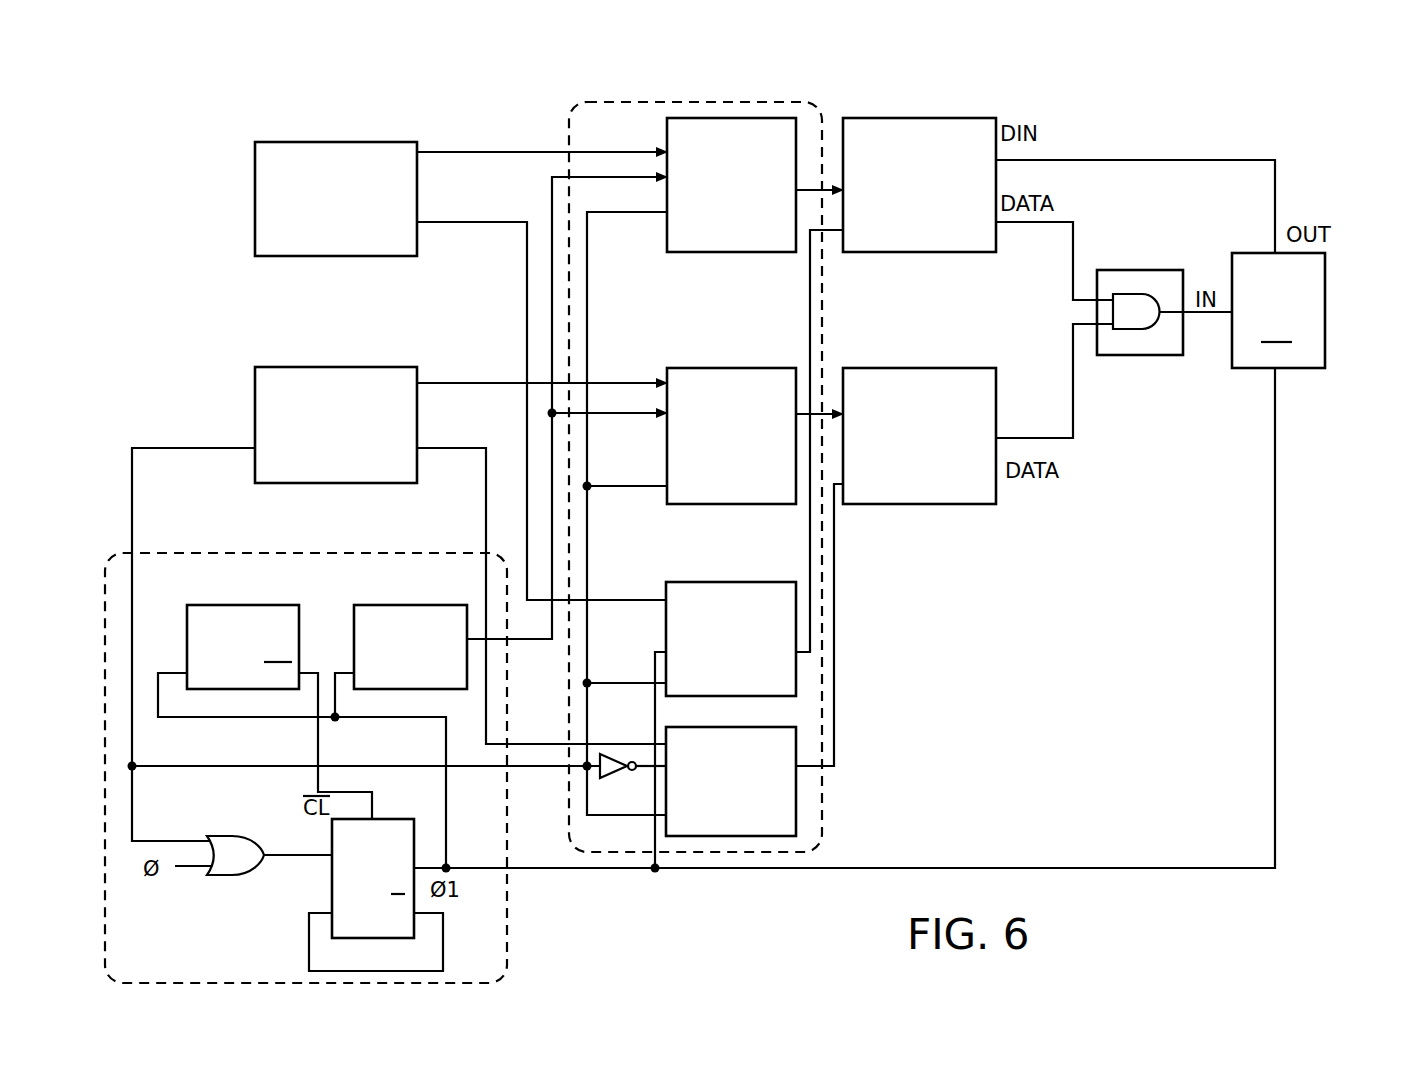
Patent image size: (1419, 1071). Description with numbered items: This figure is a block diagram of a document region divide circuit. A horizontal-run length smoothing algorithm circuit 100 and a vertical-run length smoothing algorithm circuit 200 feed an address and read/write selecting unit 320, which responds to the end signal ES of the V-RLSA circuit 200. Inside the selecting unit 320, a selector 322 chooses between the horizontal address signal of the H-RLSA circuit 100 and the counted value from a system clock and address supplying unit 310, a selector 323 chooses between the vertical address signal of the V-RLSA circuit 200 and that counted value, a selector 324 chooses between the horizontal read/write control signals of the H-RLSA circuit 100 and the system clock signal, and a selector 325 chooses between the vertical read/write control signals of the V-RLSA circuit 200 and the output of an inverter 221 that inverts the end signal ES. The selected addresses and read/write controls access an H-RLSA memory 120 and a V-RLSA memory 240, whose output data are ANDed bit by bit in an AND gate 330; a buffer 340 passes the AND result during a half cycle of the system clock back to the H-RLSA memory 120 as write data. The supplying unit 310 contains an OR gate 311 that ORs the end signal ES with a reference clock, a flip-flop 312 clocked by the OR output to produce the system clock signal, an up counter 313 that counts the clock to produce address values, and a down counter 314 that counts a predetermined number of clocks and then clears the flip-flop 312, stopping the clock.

The horizontal-run length smoothing algorithm (H-RLSA) circuit 100 is at (360, 256).
The vertical-run length smoothing algorithm (V-RLSA) circuit 200 is at (346, 483).
The H-RLSA memory 120 is at (953, 234).
The V-RLSA memory 240 is at (859, 388).
The address and read/write selecting unit 320 is at (822, 686).
The selector 322 is at (686, 133).
The selector 323 is at (733, 380).
The selector 324 is at (744, 600).
The selector 325 is at (780, 822).
The inverter 221 is at (615, 758).
The AND gate 330 is at (1158, 284).
The buffer 340 is at (1308, 292).
The system clock and address supplying unit 310 is at (507, 913).
The OR gate 311 is at (242, 850).
The flip-flop 312 is at (400, 832).
The up counter 313 is at (440, 618).
The down counter 314 is at (204, 620).